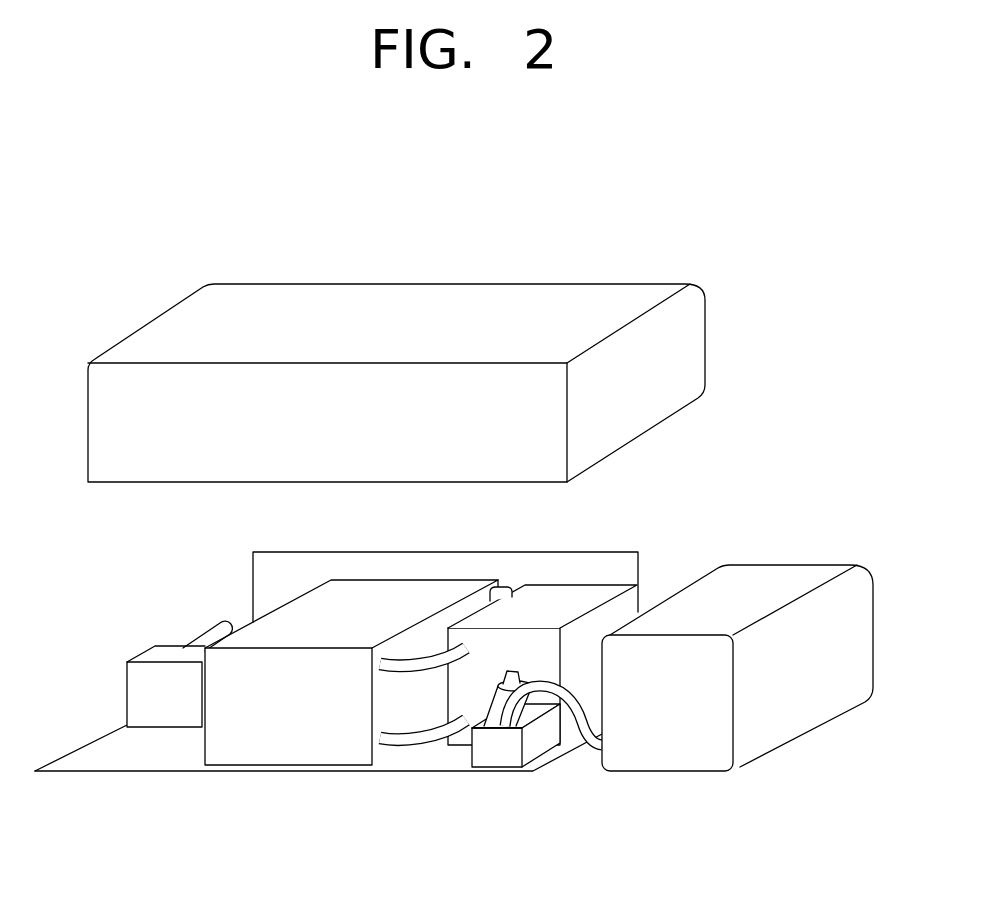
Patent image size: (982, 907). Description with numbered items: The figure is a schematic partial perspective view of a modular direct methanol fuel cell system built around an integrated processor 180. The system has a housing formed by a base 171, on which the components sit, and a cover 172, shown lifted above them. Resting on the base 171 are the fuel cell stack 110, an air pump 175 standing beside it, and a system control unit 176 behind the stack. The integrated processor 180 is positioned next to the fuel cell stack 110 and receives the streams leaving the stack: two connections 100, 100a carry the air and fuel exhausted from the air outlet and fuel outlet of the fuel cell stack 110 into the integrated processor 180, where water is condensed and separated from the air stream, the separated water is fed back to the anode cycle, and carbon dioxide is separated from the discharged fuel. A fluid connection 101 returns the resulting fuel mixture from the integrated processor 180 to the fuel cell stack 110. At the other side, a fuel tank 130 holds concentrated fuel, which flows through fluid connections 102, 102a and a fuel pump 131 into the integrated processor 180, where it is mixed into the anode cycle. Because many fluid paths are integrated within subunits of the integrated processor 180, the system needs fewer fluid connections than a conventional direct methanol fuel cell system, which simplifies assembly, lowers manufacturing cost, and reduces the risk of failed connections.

The cover 172 is at (362, 300).
The base 171 is at (92, 762).
The system control unit 176 is at (605, 563).
The air pump 175 is at (165, 720).
The fuel cell stack 110 is at (283, 760).
The connection 100 is at (571, 624).
The connection 100a is at (503, 590).
The integrated processor 180 is at (602, 597).
The fluid connection 101 is at (414, 737).
The fluid connection 102 is at (488, 737).
The fluid connection 102a is at (583, 750).
The fuel pump 131 is at (508, 755).
The fuel tank 130 is at (673, 760).